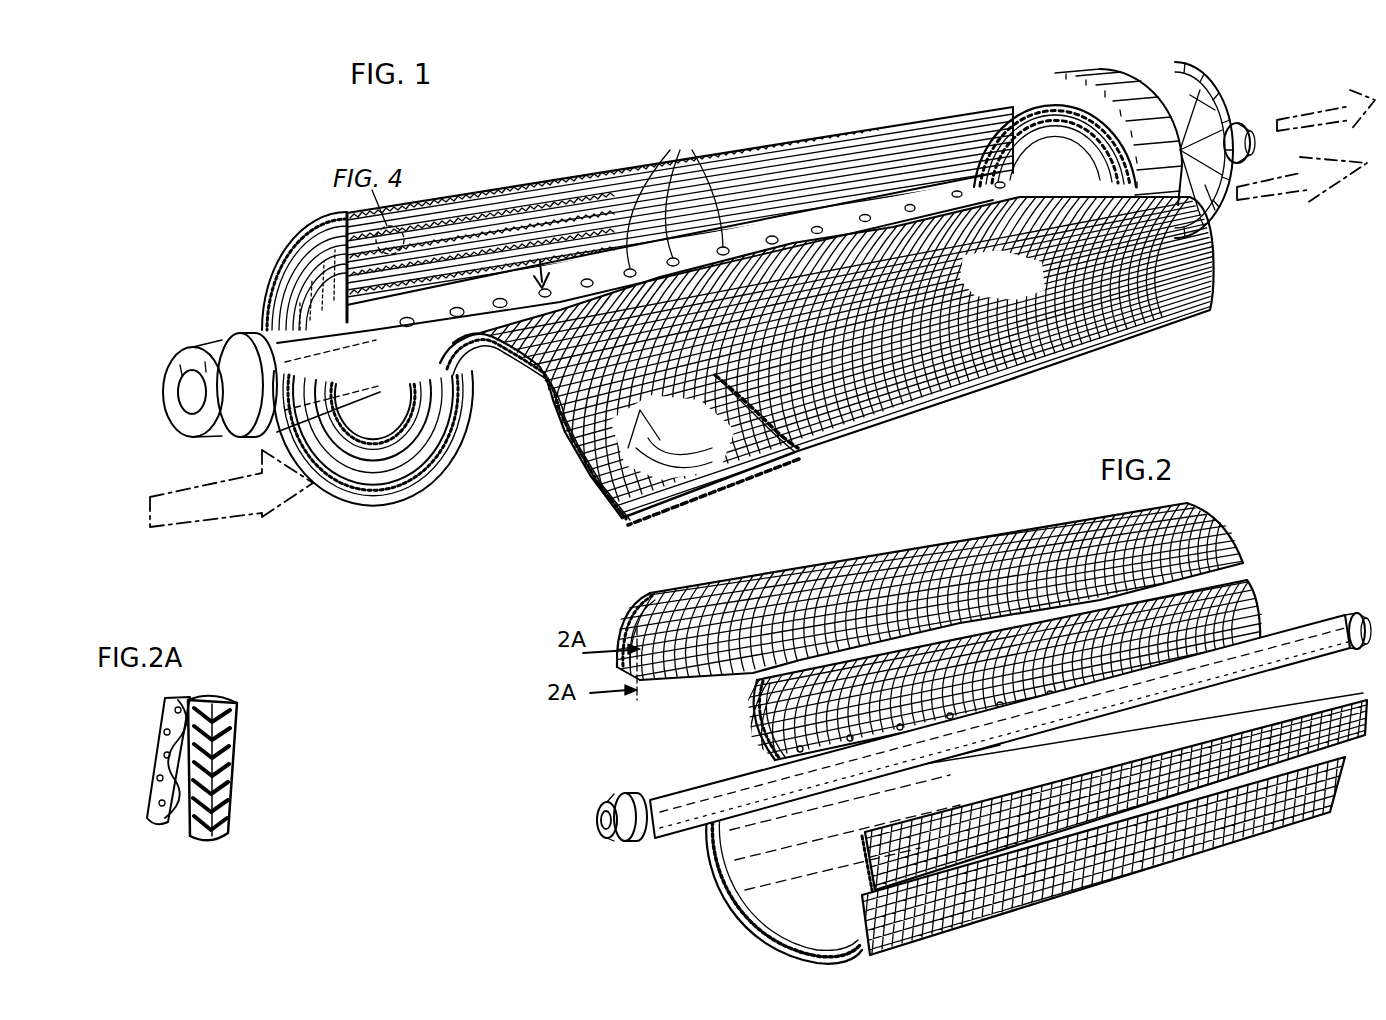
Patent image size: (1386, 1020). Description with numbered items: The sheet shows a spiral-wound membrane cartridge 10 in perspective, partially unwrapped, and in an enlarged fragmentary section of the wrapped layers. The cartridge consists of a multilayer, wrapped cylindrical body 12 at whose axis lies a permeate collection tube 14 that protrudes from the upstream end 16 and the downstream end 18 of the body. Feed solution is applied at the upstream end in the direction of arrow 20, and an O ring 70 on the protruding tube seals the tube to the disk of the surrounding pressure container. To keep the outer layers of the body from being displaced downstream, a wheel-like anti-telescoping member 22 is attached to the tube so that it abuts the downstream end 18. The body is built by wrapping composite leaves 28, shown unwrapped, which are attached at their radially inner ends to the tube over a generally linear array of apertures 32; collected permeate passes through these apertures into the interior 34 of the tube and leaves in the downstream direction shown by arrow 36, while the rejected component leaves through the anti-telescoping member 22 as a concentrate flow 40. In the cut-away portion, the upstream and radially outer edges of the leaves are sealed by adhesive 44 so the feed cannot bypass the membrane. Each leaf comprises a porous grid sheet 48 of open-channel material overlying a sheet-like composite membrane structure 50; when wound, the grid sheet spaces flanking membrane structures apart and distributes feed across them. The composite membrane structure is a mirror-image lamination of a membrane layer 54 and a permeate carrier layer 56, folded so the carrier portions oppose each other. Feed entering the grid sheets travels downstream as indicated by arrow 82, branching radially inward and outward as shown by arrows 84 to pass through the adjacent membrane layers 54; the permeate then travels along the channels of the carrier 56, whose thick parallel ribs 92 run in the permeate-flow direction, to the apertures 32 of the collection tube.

In FIG. 1, the membrane cartridge 10 is at (858, 116).
In FIG. 1, the cylindrical body 12 is at (520, 184).
In FIG. 1, the permeate collection tube 14 is at (273, 340).
In FIG. 2, the permeate collection tube 14 is at (680, 796).
In FIG. 1, the upstream end 16 is at (313, 247).
In FIG. 1, the downstream end 18 is at (1058, 72).
In FIG. 1, the arrow 20 is at (198, 510).
In FIG. 1, the wheel-like anti-telescoping member 22 is at (1193, 98).
In FIG. 2, the composite leaf 28 is at (885, 550).
In FIG. 1, the apertures 32 is at (675, 196).
In FIG. 1, the interior of tube 34 is at (178, 416).
In FIG. 2, the interior of tube 34 is at (610, 837).
In FIG. 1, the arrow 36 is at (1313, 107).
In FIG. 1, the concentrate flow 40 is at (1277, 188).
In FIG. 1, the adhesive 44 is at (620, 517).
In FIG. 1, the porous grid sheet 48 is at (740, 413).
In FIG. 2A, the porous grid sheet 48 is at (153, 777).
In FIG. 1, the composite membrane structure 50 is at (687, 488).
In FIG. 2, the composite membrane structure 50 is at (783, 920).
In FIG. 1, the membrane layer 54 is at (727, 393).
In FIG. 2A, the membrane layer 54 is at (237, 710).
In FIG. 2A, the permeate carrier layer 56 is at (243, 697).
In FIG. 1, the O ring 70 is at (222, 340).
In FIG. 2, the O ring 70 is at (630, 792).
In FIG. 1, the arrow 82 is at (943, 266).
In FIG. 1, the arrows 84 is at (603, 480).
In FIG. 2A, the ribs 92 is at (207, 700).